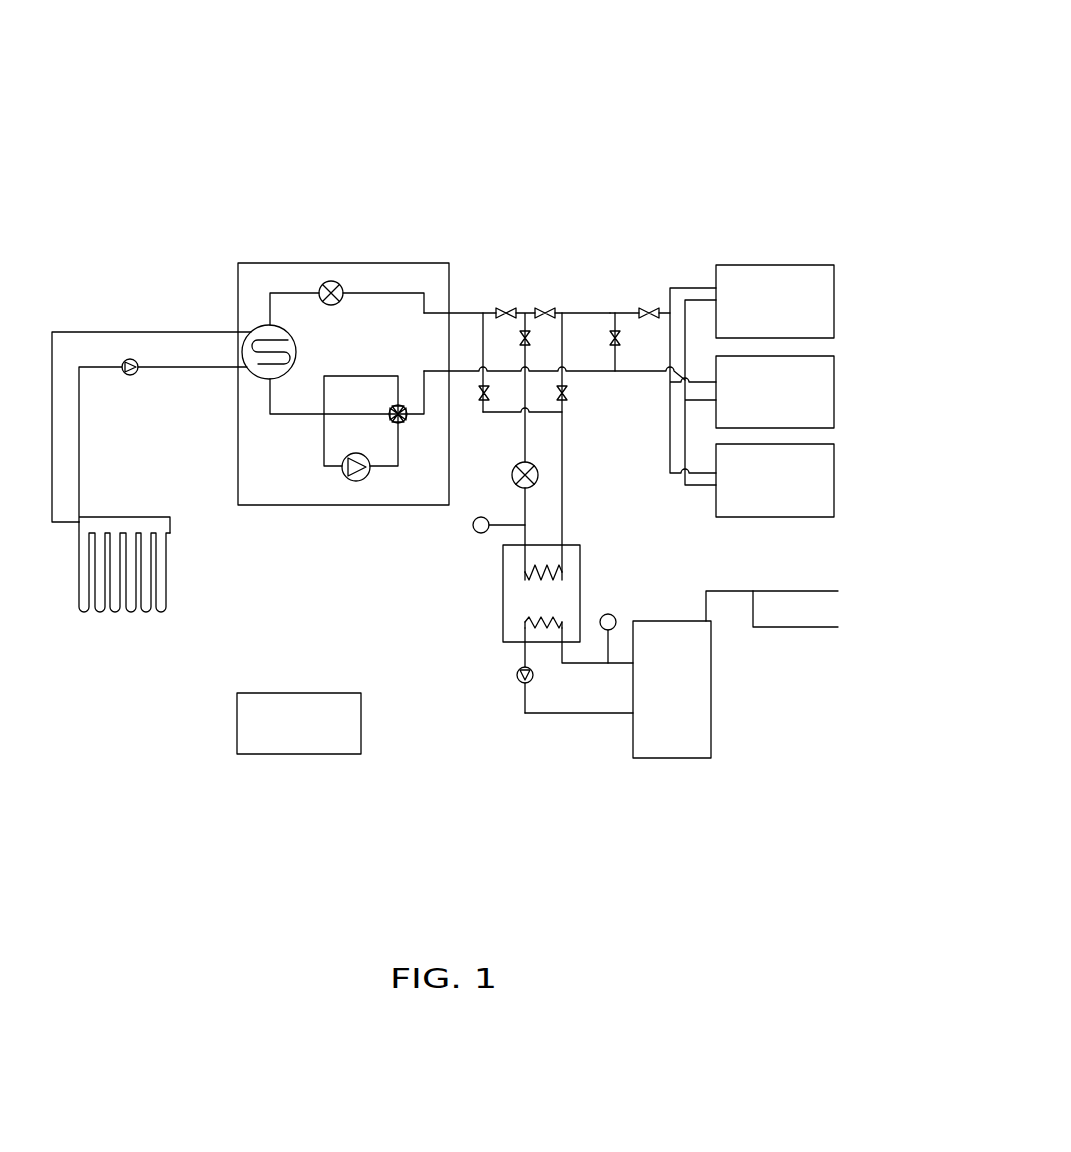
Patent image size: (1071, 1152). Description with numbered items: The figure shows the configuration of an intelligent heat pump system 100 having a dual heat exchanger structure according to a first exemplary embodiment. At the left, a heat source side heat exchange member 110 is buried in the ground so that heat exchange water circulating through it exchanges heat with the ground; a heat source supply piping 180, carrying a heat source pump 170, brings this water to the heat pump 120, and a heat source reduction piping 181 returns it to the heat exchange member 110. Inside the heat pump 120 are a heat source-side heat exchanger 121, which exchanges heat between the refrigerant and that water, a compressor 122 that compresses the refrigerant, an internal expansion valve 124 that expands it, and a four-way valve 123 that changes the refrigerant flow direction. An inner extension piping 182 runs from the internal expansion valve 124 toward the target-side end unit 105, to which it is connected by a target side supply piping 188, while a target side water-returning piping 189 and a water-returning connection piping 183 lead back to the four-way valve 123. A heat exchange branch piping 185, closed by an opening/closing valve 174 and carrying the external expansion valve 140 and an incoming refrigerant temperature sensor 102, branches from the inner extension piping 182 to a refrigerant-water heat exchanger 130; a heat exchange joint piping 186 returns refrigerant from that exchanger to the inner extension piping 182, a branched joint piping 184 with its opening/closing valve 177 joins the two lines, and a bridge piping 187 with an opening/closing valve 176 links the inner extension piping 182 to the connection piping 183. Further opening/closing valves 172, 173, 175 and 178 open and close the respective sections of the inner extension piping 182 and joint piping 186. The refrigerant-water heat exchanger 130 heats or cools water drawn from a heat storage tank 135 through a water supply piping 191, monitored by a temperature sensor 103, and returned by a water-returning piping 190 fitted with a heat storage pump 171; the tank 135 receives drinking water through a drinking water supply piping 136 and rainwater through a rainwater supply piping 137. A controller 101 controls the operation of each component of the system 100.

The intelligent heat pump system 100 is at (760, 52).
The controller 101 is at (309, 745).
The incoming refrigerant temperature sensor 102 is at (476, 533).
The temperature sensor 103 is at (608, 614).
The target-side end unit 105 is at (795, 478).
The heat source side heat exchange member 110 is at (128, 612).
The heat pump 120 is at (402, 127).
The heat source-side heat exchanger 121 is at (254, 327).
The compressor 122 is at (356, 453).
The four-way valve 123 is at (405, 405).
The internal expansion valve 124 is at (334, 281).
The refrigerant-water heat exchanger 130 is at (502, 605).
The heat storage tank 135 is at (665, 745).
The drinking water supply piping 136 is at (777, 591).
The rainwater supply piping 137 is at (798, 630).
The external expansion valve 140 is at (537, 475).
The heat source pump 170 is at (130, 376).
The heat storage pump 171 is at (518, 677).
The opening/closing valve 172 is at (498, 310).
The opening/closing valve 173 is at (538, 312).
The opening/closing valve 174 is at (527, 345).
The opening/closing valve 175 is at (668, 312).
The opening/closing valve 176 is at (618, 344).
The opening/closing valve 177 is at (482, 414).
The opening/closing valve 178 is at (566, 401).
The heat source supply piping 180 is at (97, 365).
The heat source reduction piping 181 is at (63, 330).
The inner extension piping 182 is at (462, 312).
The water-returning connection piping 183 is at (482, 373).
The branched joint piping 184 is at (476, 312).
The heat exchange branch piping 185 is at (522, 313).
The heat exchange joint piping 186 is at (563, 313).
The bridge piping 187 is at (645, 309).
The target side supply piping 188 is at (688, 287).
The target side water-returning piping 189 is at (700, 485).
The water-returning piping 190 is at (524, 712).
The water supply piping 191 is at (577, 667).